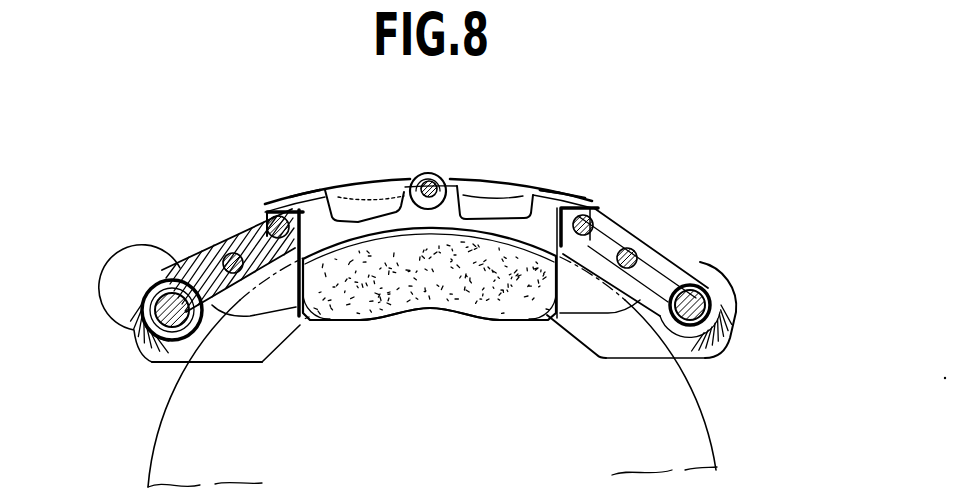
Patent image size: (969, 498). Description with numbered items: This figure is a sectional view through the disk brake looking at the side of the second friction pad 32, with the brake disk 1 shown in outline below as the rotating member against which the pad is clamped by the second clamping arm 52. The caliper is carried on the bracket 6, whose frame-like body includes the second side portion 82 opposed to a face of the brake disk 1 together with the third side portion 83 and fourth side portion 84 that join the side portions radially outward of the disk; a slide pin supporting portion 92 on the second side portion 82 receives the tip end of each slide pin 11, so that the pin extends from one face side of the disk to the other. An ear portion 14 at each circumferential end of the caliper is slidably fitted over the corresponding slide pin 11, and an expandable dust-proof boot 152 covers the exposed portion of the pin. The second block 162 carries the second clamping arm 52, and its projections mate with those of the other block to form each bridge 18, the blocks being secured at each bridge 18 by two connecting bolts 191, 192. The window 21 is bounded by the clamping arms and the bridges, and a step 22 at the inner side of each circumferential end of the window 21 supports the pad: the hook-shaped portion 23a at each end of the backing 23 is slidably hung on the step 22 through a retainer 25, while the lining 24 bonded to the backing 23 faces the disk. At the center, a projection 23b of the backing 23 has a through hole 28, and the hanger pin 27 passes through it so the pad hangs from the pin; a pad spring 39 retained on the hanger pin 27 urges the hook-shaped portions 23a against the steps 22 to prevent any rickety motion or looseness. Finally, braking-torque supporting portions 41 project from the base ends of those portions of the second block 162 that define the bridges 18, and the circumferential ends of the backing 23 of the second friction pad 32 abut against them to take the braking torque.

The brake disk 1 is at (146, 458).
The second friction pad 32 is at (397, 318).
The second clamping arm 52 is at (366, 194).
The bracket 6 is at (257, 363).
The second side portion 82 is at (573, 342).
The third side portion 83 is at (140, 348).
The fourth side portion 84 is at (728, 348).
The slide pin supporting portion 92 is at (721, 300).
The slide pin 11 is at (727, 285).
The ear portion 14 is at (708, 287).
The dust-proof boot 152 is at (668, 348).
The second block 162 is at (549, 179).
The bridge 18 is at (640, 222).
The connecting bolt 191 is at (637, 251).
The connecting bolt 192 is at (594, 224).
The window 21 is at (482, 184).
The step 22 is at (600, 205).
The backing 23 is at (338, 195).
The hook-shaped portion 23a is at (570, 193).
The projection 23b is at (430, 172).
The lining 24 is at (465, 292).
The retainer 25 is at (552, 227).
The hanger pin 27 is at (441, 183).
The through hole 28 is at (424, 184).
The pad spring 39 is at (503, 194).
The braking-torque supporting portion 41 is at (546, 324).